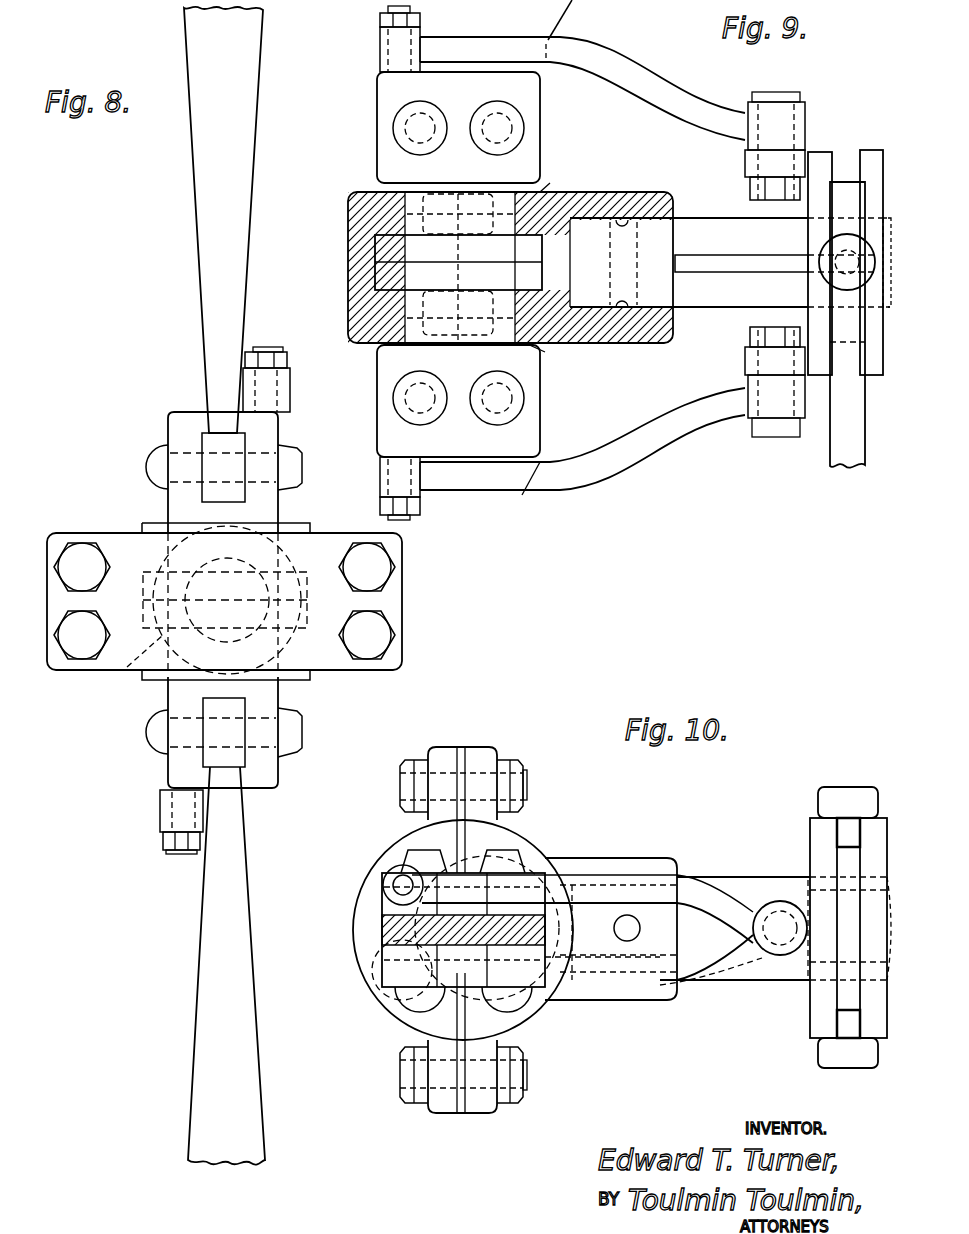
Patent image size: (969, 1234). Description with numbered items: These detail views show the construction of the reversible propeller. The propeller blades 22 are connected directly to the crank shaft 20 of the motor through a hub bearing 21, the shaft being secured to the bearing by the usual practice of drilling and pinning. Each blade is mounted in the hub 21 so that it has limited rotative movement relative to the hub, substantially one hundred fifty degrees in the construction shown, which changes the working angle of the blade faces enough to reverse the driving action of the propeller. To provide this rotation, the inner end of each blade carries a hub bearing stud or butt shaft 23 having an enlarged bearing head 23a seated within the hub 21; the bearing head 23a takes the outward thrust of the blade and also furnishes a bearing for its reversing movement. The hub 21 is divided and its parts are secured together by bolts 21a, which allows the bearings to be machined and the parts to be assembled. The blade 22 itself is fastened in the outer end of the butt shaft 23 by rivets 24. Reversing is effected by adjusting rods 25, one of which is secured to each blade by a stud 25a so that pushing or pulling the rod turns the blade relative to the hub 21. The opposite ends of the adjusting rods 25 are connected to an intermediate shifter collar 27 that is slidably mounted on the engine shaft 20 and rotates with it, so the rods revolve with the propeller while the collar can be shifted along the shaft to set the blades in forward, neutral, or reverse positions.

In FIG. 8, the crank shaft 20 is at (172, 682).
In FIG. 9, the crank shaft 20 is at (733, 297).
In FIG. 10, the crank shaft 20 is at (752, 880).
In FIG. 8, the hub bearing 21 is at (116, 680).
In FIG. 9, the hub bearing 21 is at (662, 340).
In FIG. 10, the hub bearing 21 is at (614, 870).
In FIG. 8, the bolts 21a is at (82, 560).
In FIG. 9, the bolts 21a is at (545, 190).
In FIG. 10, the bolts 21a is at (525, 778).
In FIG. 8, the propeller blades 22 is at (202, 274).
In FIG. 9, the propeller blades 22 is at (560, 10).
In FIG. 10, the propeller blades 22 is at (461, 930).
In FIG. 8, the hub bearing studs or butt shafts 23 is at (168, 421).
In FIG. 9, the hub bearing studs or butt shafts 23 is at (383, 153).
In FIG. 10, the hub bearing studs or butt shafts 23 is at (382, 950).
In FIG. 8, the enlarged bearing heads 23a is at (283, 575).
In FIG. 9, the enlarged bearing heads 23a is at (375, 272).
In FIG. 8, the rivets 24 is at (296, 468).
In FIG. 9, the rivets 24 is at (400, 115).
In FIG. 10, the rivets 24 is at (405, 853).
In FIG. 9, the adjusting rods 25 is at (660, 78).
In FIG. 10, the adjusting rods 25 is at (640, 885).
In FIG. 8, the stud 25a is at (292, 336).
In FIG. 9, the stud 25a is at (388, 8).
In FIG. 10, the stud 25a is at (385, 886).
In FIG. 9, the shifter collar 27 is at (868, 162).
In FIG. 10, the shifter collar 27 is at (812, 822).